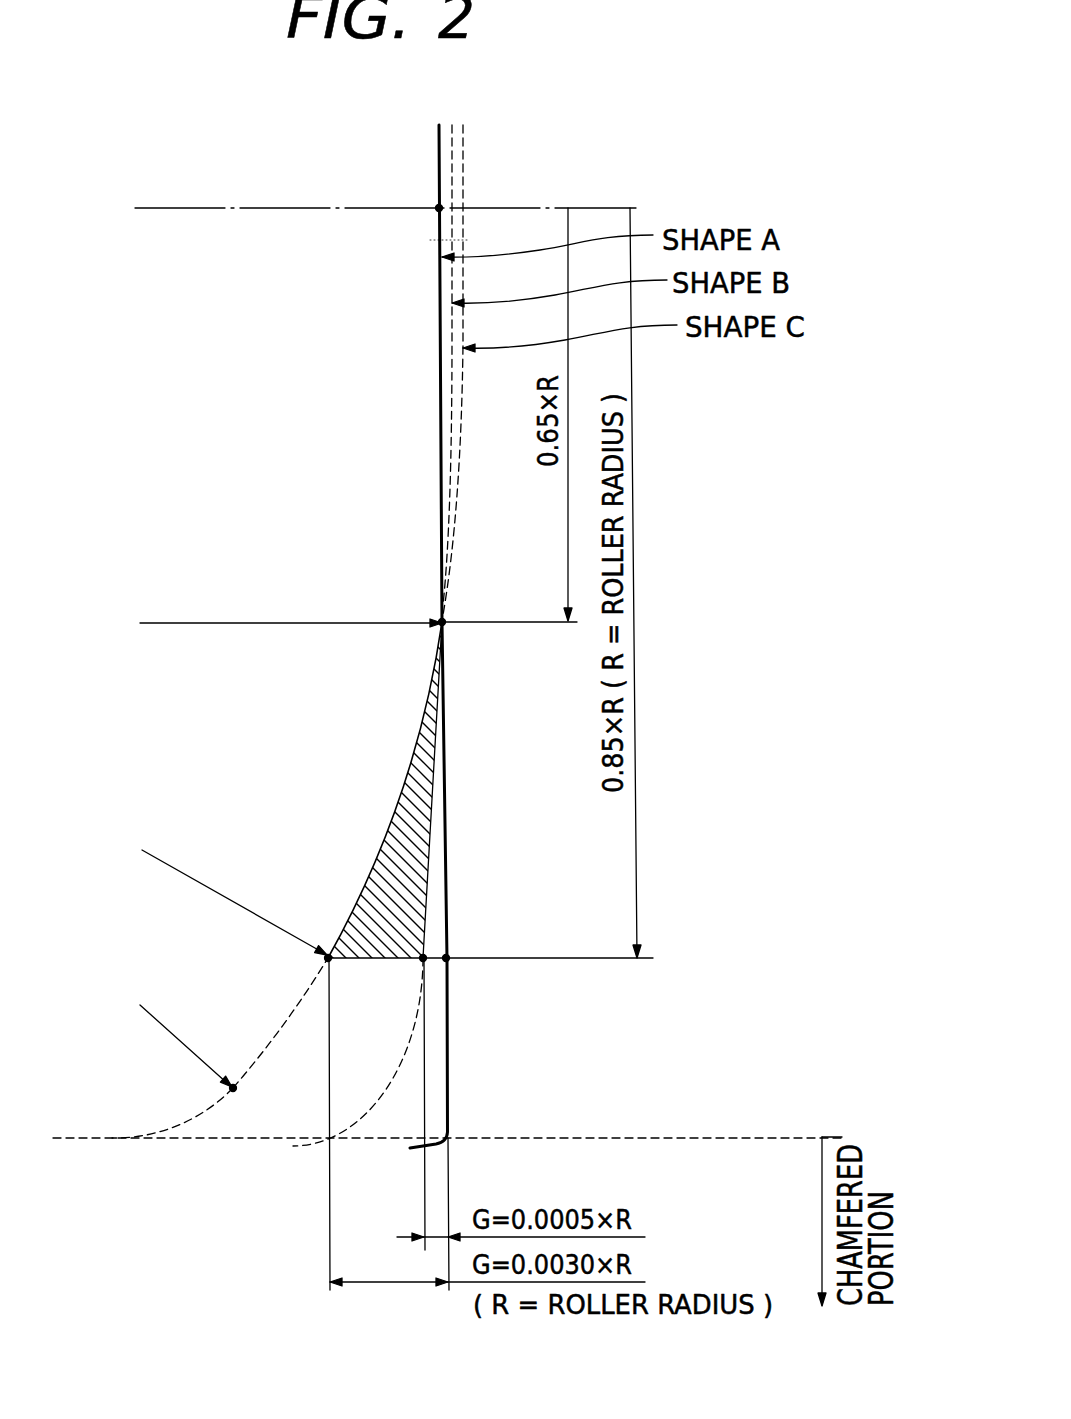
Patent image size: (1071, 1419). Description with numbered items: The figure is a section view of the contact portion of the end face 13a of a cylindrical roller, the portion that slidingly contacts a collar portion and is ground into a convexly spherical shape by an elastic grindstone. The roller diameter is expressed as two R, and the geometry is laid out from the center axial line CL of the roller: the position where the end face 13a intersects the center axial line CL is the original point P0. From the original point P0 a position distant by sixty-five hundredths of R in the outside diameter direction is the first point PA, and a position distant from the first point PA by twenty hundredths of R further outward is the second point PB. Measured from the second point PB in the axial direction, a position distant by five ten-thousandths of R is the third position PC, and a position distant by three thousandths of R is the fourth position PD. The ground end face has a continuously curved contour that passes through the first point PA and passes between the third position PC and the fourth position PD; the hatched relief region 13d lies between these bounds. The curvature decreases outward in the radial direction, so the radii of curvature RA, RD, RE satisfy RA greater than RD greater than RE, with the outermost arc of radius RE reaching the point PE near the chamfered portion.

The end face 13a is at (441, 147).
The crowned portion (relief region between profile shapes) 13d is at (407, 786).
The center axial line CL is at (315, 207).
The original point P0 is at (439, 209).
The first point PA is at (444, 626).
The second point PB is at (447, 960).
The third position PC is at (424, 955).
The fourth position PD is at (320, 949).
The point PE is at (230, 1089).
The radius of curvature at first point RA is at (291, 607).
The radius of curvature at fourth position RD is at (234, 902).
The radius of curvature at outermost point RE is at (186, 1041).